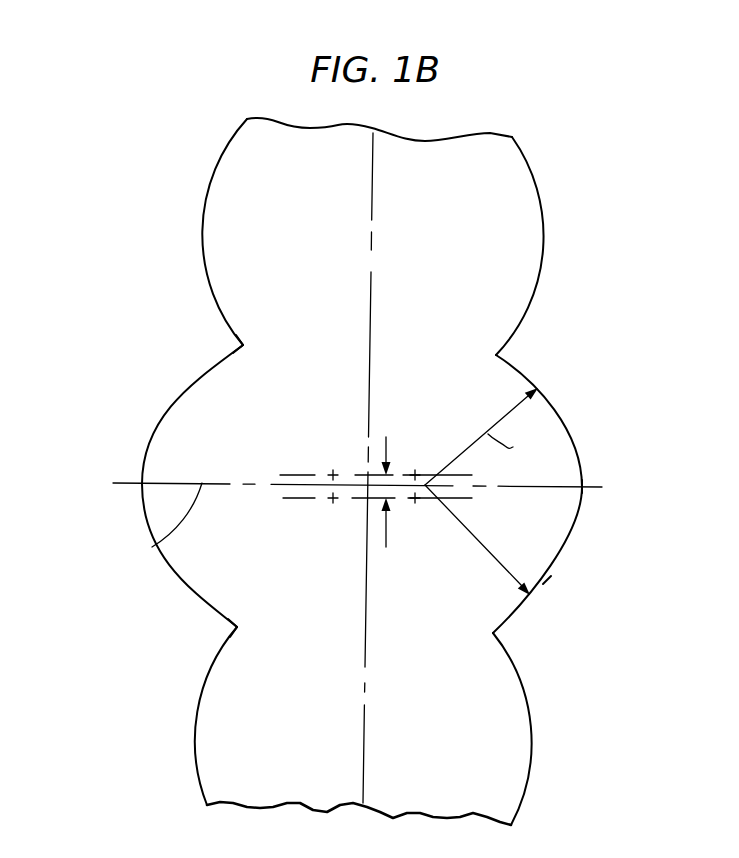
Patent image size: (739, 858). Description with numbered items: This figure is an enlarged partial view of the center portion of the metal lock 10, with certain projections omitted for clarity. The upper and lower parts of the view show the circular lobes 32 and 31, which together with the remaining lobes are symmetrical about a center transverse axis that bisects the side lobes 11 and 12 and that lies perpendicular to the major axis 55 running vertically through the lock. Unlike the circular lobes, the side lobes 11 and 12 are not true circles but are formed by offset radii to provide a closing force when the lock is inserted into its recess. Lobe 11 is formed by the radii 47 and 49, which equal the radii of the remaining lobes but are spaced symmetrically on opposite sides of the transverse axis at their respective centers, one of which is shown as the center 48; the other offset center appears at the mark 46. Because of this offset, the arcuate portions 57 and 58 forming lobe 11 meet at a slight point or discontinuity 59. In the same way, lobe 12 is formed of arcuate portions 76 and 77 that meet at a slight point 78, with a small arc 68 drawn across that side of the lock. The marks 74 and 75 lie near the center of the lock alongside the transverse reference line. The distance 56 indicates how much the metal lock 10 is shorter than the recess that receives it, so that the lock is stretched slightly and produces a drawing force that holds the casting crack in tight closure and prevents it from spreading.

The metal lock 10 is at (200, 252).
The lobe 11 is at (572, 428).
The lobe 12 is at (145, 442).
The circular lobe 31 is at (492, 693).
The circular lobe 32 is at (495, 200).
The upper reference point 46 is at (417, 475).
The radius 47 is at (488, 552).
The center 48 is at (415, 500).
The radius 49 is at (514, 446).
The major axis 55 is at (373, 170).
The distance 56 is at (384, 507).
The arcuate portion 57 is at (552, 402).
The arcuate portion 58 is at (550, 578).
The point 59 is at (587, 486).
The radius arc 68 is at (153, 546).
The upper offset point 74 is at (333, 474).
The lower offset point 75 is at (333, 499).
The arcuate portion 76 is at (207, 365).
The arcuate portion 77 is at (225, 615).
The point 78 is at (140, 483).